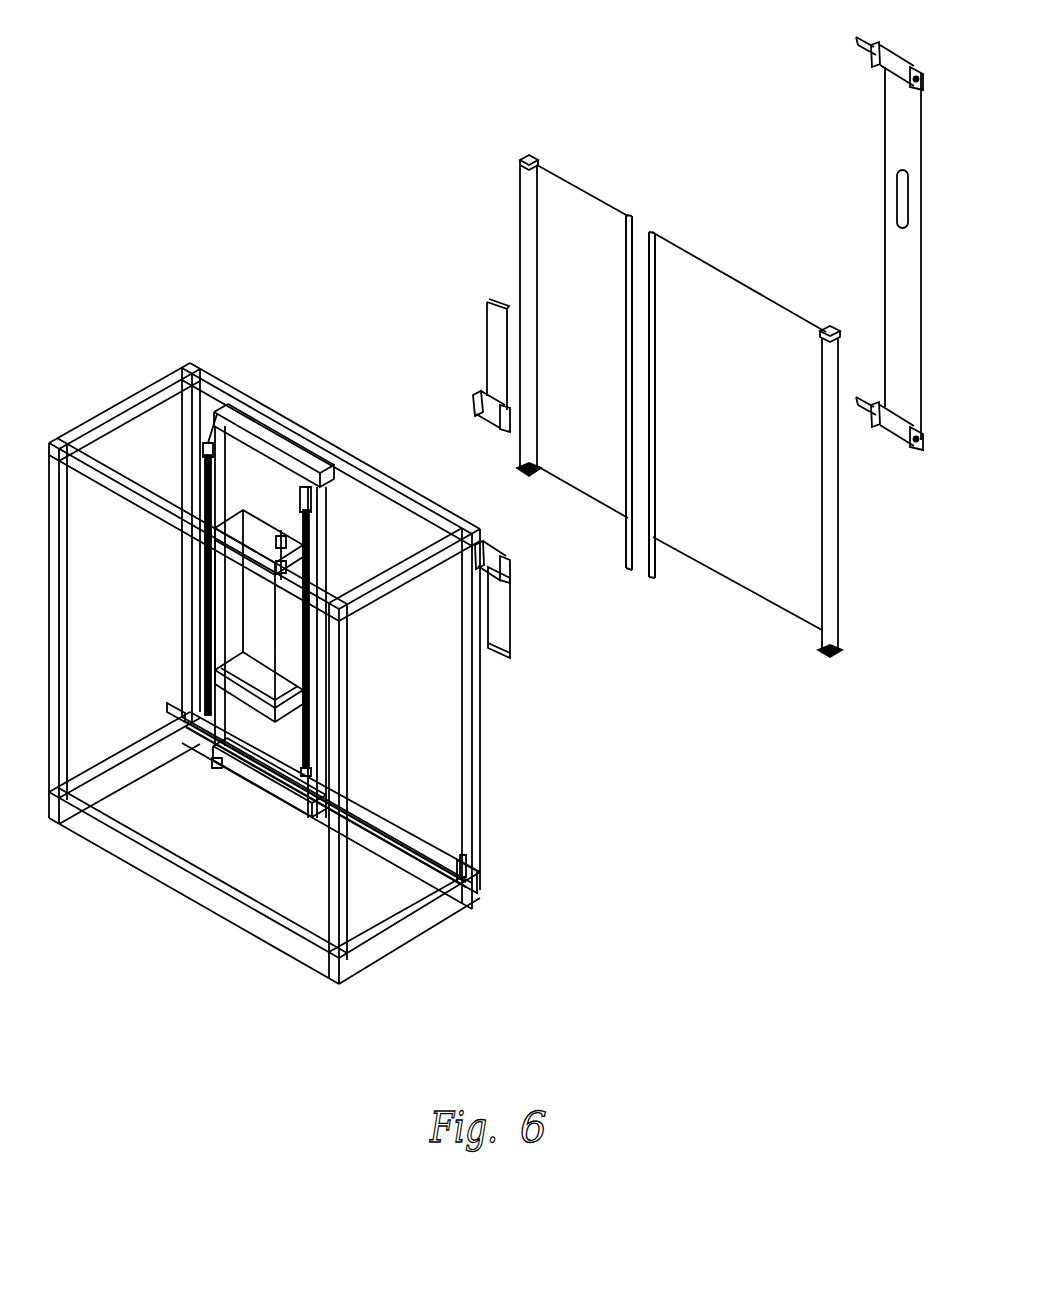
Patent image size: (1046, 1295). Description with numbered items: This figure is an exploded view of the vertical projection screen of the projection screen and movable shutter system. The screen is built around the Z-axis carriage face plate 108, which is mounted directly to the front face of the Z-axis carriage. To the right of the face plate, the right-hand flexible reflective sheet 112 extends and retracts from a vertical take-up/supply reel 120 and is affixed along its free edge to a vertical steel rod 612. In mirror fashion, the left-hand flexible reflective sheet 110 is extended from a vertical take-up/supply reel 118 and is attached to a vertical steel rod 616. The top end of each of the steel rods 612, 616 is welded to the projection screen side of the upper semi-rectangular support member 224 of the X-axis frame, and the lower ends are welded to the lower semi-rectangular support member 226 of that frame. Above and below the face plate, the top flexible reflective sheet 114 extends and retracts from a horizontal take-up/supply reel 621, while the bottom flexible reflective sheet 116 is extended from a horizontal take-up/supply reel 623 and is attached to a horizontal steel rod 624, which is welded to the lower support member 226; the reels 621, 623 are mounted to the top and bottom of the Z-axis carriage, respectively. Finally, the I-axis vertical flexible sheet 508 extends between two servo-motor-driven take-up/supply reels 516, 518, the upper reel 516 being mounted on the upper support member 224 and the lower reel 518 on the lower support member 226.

The Z-axis carriage face plate 108 is at (445, 330).
The left-hand flexible reflective sheet 110 is at (742, 275).
The right-hand flexible reflective sheet 112 is at (584, 190).
The top flexible reflective sheet 114 is at (488, 347).
The bottom flexible reflective sheet 116 is at (534, 639).
The vertical take-up/supply reel 118 is at (826, 328).
The vertical take-up/supply reel 120 is at (528, 156).
The upper semi-rectangular support member 224 is at (286, 415).
The lower semi-rectangular support member 226 is at (287, 800).
The I-axis vertical flexible sheet 508 is at (885, 165).
The upper servo-motor-driven take-up/supply reel 516 is at (912, 80).
The lower servo-motor-driven take-up/supply reel 518 is at (918, 450).
The vertical steel rod 612 is at (630, 214).
The vertical steel rod 616 is at (651, 232).
The horizontal take-up/supply reel 621 is at (478, 406).
The horizontal take-up/supply reel 623 is at (513, 566).
The horizontal steel rod 624 is at (508, 658).